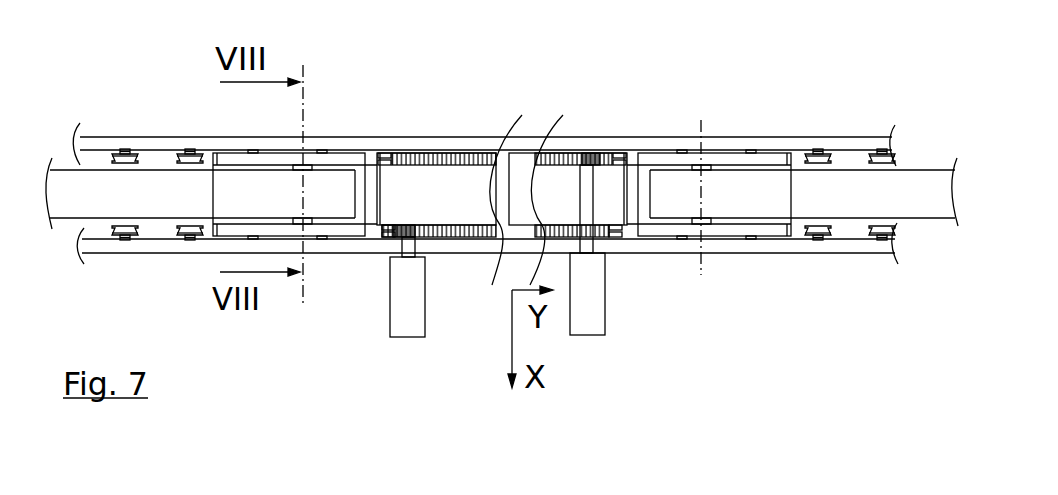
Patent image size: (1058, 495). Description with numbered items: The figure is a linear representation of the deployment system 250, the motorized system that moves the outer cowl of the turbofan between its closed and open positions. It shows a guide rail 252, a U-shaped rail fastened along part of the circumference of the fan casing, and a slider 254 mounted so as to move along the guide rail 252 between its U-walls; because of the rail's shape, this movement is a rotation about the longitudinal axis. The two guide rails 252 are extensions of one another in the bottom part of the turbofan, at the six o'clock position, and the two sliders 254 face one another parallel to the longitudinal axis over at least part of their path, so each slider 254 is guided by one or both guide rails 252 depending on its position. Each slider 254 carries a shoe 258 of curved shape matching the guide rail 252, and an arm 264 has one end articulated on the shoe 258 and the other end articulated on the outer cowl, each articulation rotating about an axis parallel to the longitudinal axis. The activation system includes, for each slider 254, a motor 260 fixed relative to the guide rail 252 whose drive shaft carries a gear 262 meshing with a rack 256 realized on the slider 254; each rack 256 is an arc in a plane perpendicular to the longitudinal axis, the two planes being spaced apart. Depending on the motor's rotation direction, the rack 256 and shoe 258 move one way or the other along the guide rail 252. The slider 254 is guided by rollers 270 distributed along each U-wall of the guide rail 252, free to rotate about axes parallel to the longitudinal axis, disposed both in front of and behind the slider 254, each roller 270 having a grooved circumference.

The deployment system 250 is at (815, 67).
The guide rail 252 is at (360, 143).
The slider 254 is at (442, 157).
The rack 256 is at (612, 157).
The shoe 258 is at (230, 162).
The motor 260 is at (407, 322).
The gear 262 is at (393, 238).
The arm 264 is at (98, 200).
The rollers 270 is at (822, 237).